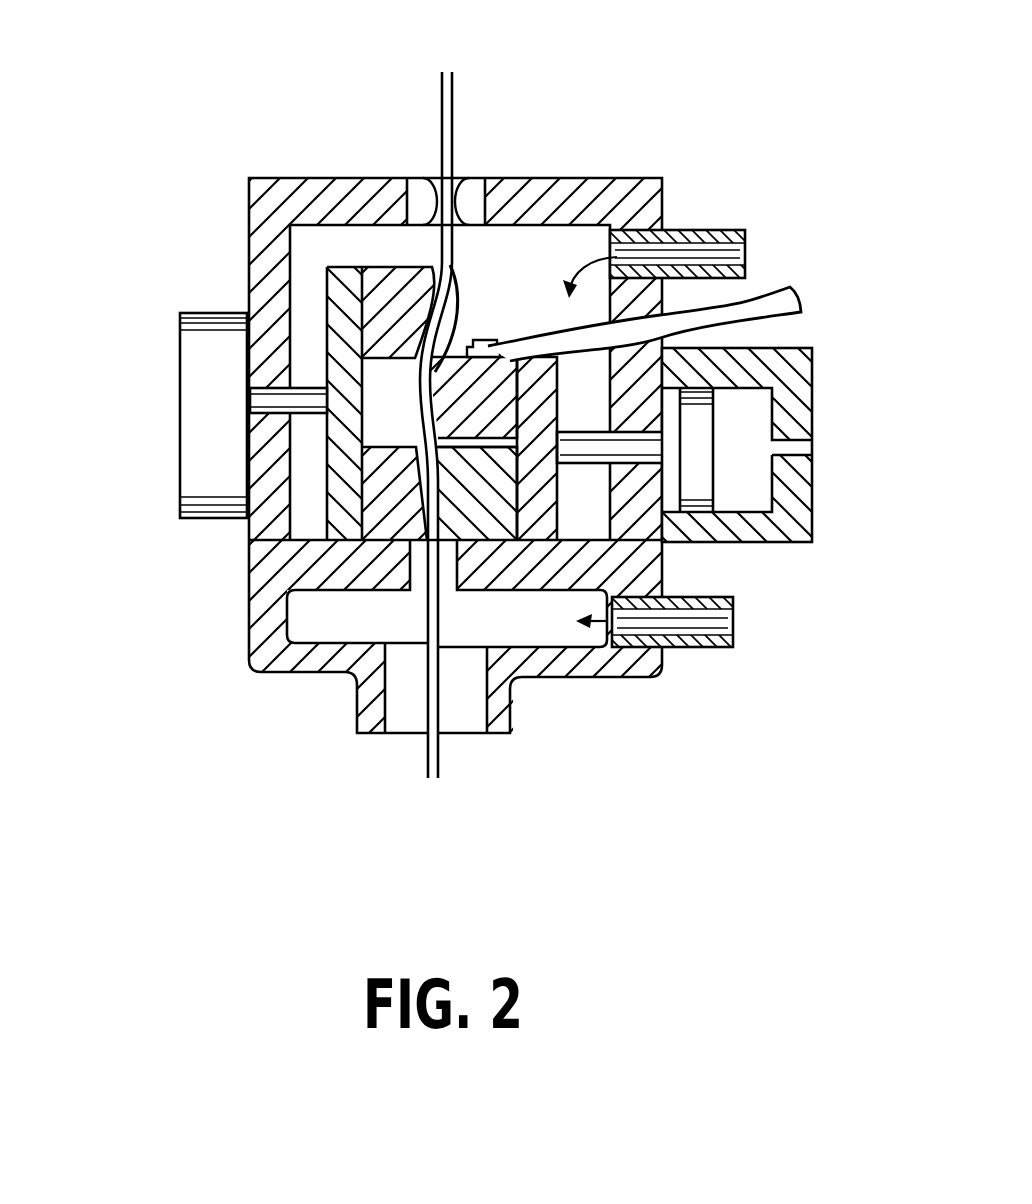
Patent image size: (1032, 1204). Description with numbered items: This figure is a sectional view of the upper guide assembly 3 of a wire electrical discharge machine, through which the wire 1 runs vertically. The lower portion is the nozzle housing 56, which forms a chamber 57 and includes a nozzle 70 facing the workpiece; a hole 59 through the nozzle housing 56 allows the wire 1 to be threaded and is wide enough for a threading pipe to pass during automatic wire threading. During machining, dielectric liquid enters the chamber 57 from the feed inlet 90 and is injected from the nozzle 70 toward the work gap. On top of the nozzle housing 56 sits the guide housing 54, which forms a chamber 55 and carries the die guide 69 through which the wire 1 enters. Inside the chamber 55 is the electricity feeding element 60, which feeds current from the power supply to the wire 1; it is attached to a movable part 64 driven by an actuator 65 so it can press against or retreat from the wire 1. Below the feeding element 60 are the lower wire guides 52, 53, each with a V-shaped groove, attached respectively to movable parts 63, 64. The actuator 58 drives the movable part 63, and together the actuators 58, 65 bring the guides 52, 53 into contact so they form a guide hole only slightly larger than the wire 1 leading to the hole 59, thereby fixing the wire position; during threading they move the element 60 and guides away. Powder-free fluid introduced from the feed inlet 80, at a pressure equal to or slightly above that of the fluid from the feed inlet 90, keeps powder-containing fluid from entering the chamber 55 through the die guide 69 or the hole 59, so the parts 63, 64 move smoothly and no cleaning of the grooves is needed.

The wire 1 is at (442, 92).
The upper guide assembly 3 is at (865, 48).
The lower wire guide 52 is at (380, 505).
The lower wire guide 53 is at (485, 512).
The guide housing 54 is at (643, 203).
The chamber 55 is at (308, 272).
The nozzle housing 56 is at (660, 560).
The chamber 57 is at (300, 610).
The actuator 58 is at (205, 352).
The hole 59 is at (410, 563).
The electricity feeding element 60 is at (488, 355).
The movable part 63 is at (332, 468).
The movable part 64 is at (533, 520).
The actuator 65 is at (718, 422).
The die guide 69 is at (475, 205).
The nozzle 70 is at (457, 712).
The feed inlet 80 is at (723, 228).
The feed inlet 90 is at (687, 650).